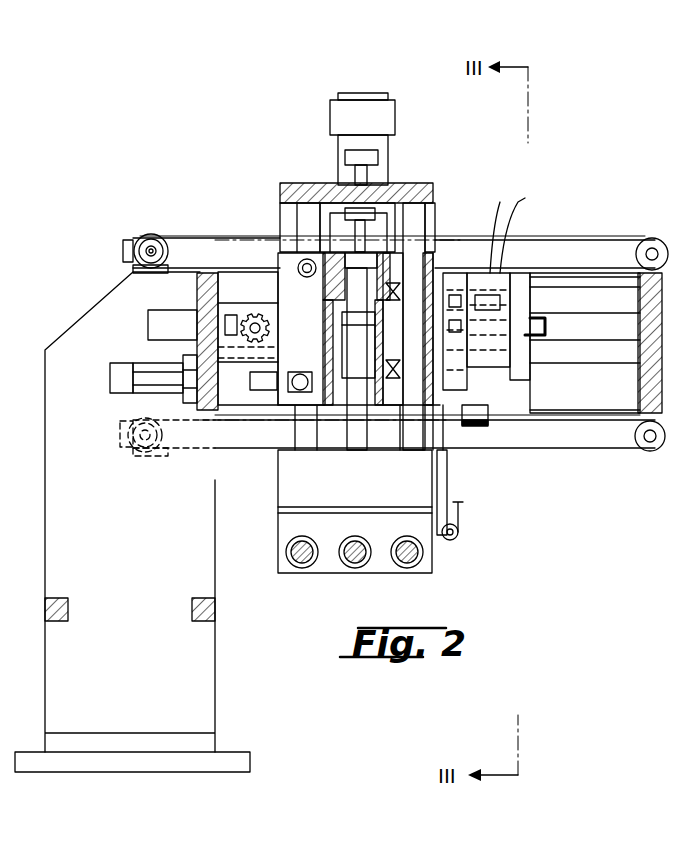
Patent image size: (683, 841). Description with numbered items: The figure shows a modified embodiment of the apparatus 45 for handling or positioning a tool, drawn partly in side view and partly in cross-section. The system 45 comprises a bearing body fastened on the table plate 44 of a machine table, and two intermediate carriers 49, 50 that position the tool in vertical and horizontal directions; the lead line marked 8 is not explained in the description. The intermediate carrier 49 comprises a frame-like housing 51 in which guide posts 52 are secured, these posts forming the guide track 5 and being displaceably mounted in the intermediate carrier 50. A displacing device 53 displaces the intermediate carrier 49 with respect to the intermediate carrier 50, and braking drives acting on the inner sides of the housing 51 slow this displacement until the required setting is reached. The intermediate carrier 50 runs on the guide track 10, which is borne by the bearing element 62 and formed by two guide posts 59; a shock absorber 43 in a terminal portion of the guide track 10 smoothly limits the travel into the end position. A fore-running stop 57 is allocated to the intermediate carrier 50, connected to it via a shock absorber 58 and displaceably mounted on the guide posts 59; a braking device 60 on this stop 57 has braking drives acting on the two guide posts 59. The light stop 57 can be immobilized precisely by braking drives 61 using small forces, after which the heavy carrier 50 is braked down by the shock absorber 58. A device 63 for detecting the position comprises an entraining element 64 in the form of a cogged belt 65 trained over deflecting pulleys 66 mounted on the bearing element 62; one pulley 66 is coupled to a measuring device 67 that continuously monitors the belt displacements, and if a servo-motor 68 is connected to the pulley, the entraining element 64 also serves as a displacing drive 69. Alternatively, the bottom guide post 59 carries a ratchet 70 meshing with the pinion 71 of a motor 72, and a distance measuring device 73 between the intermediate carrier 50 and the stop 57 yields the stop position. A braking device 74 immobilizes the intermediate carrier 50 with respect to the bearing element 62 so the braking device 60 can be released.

The guide track 5 is at (290, 228).
The machine frame 8 is at (30, 528).
The guide track 10 is at (583, 246).
The shock absorber 43 is at (120, 368).
The table plate 44 is at (222, 765).
The apparatus 45 is at (212, 102).
The intermediate carrier 49 is at (432, 191).
The intermediate carrier 50 is at (449, 262).
The housing 51 is at (432, 484).
The guide posts 52 is at (302, 213).
The displacing device 53 is at (348, 104).
The stop 57 is at (522, 292).
The shock absorber 58 is at (553, 326).
The guide posts 59 is at (238, 300).
The braking device 60 is at (550, 380).
The braking drives 61 is at (555, 280).
The bearing element 62 is at (68, 356).
The device for detecting the position 63 is at (119, 264).
The entraining element 64 is at (620, 238).
The cogged belt 65 is at (598, 240).
The deflecting pulleys 66 is at (156, 242).
The measuring device 67 is at (131, 240).
The servo-motor 68 is at (137, 240).
The displacing drive 69 is at (150, 235).
The ratchet 70 is at (233, 347).
The pinion 71 is at (244, 344).
The motor 72 is at (255, 312).
The distance measuring device 73 is at (507, 224).
The braking device 74 is at (284, 392).